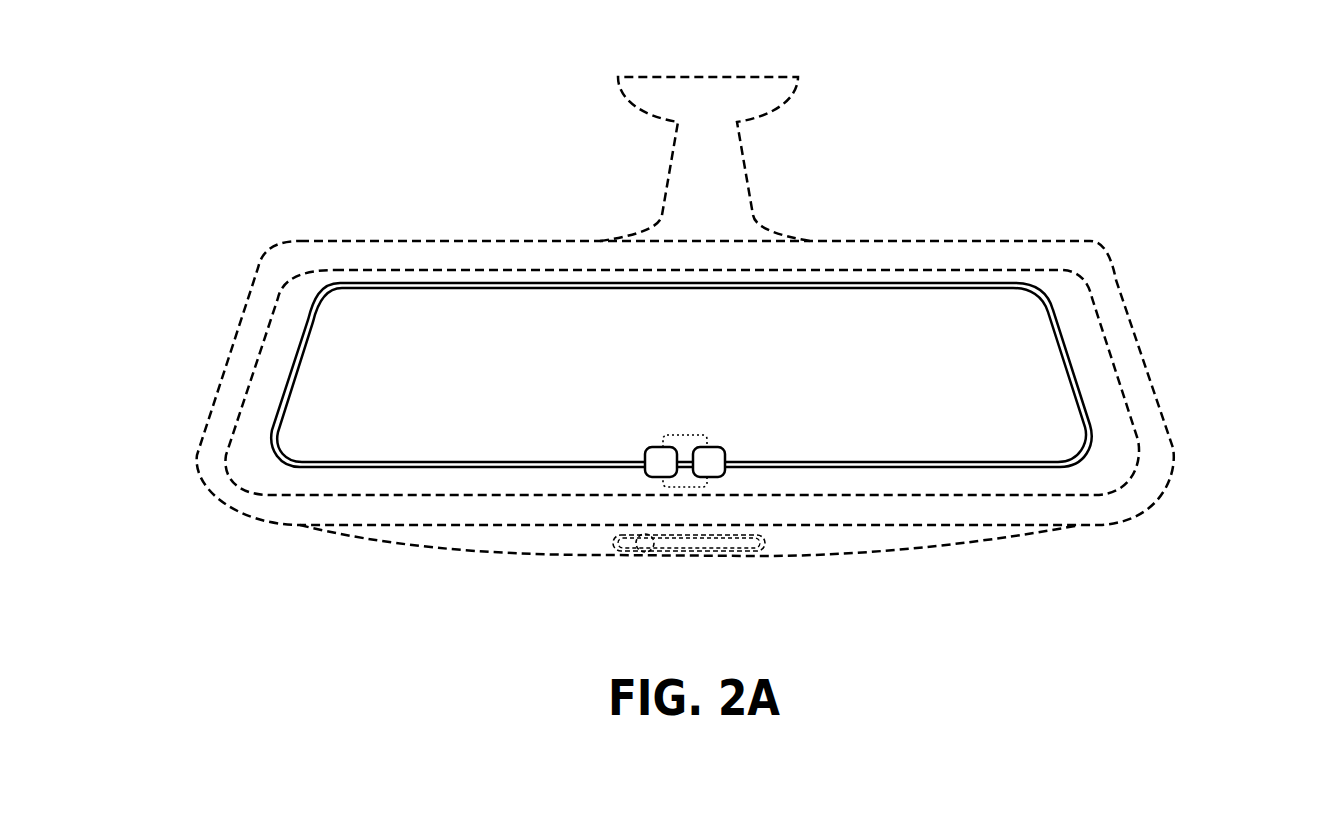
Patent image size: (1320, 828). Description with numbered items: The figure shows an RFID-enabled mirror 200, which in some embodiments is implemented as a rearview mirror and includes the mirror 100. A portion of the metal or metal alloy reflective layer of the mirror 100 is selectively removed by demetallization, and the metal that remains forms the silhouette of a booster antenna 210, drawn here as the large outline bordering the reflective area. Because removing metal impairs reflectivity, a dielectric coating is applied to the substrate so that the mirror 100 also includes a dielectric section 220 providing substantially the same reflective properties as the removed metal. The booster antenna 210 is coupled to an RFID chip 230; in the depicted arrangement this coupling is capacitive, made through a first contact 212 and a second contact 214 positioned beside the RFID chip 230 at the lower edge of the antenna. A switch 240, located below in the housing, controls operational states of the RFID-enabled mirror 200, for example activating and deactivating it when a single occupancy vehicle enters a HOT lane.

The mirror 100 is at (1082, 282).
The RFID-enabled mirror 200 is at (1025, 86).
The booster antenna 210 is at (313, 318).
The first contact 212 is at (648, 478).
The second contact 214 is at (722, 476).
The dielectric section 220 is at (1110, 472).
The RFID chip 230 is at (685, 445).
The switch 240 is at (612, 543).